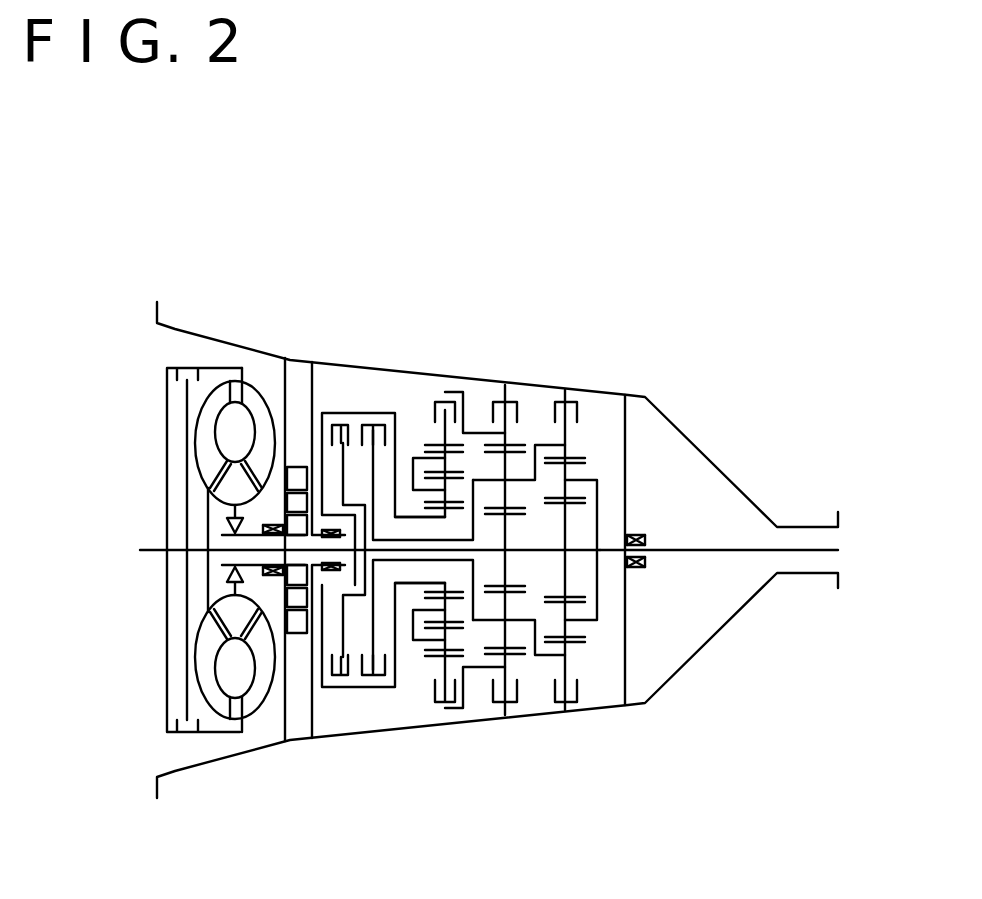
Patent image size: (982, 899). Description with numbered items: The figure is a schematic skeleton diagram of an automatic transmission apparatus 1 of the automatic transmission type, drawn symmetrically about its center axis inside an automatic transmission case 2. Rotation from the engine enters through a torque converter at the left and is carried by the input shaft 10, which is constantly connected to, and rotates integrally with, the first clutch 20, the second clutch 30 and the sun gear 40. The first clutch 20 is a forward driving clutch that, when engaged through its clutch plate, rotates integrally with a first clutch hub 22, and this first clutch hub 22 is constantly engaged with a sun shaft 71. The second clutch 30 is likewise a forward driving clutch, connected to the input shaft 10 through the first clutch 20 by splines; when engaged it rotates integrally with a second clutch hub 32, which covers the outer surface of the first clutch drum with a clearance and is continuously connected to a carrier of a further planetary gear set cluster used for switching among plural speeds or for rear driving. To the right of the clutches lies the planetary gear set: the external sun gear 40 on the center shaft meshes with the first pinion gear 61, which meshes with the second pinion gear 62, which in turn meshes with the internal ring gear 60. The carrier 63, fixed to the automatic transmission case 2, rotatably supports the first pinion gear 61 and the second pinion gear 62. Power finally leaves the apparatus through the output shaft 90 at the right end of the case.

The automatic transmission apparatus 1 is at (788, 327).
The automatic transmission case 2 is at (703, 452).
The input shaft 10 is at (298, 467).
The first clutch 20 is at (338, 687).
The second clutch 30 is at (397, 550).
The first clutch hub 22 is at (347, 467).
The second clutch hub 32 is at (377, 482).
The sun gear 40 is at (410, 583).
The ring gear 60 is at (442, 685).
The first pinion gear 61 is at (445, 600).
The second pinion gear 62 is at (430, 638).
The carrier 63 is at (412, 640).
The sun shaft 71 is at (527, 478).
The output shaft 90 is at (720, 550).